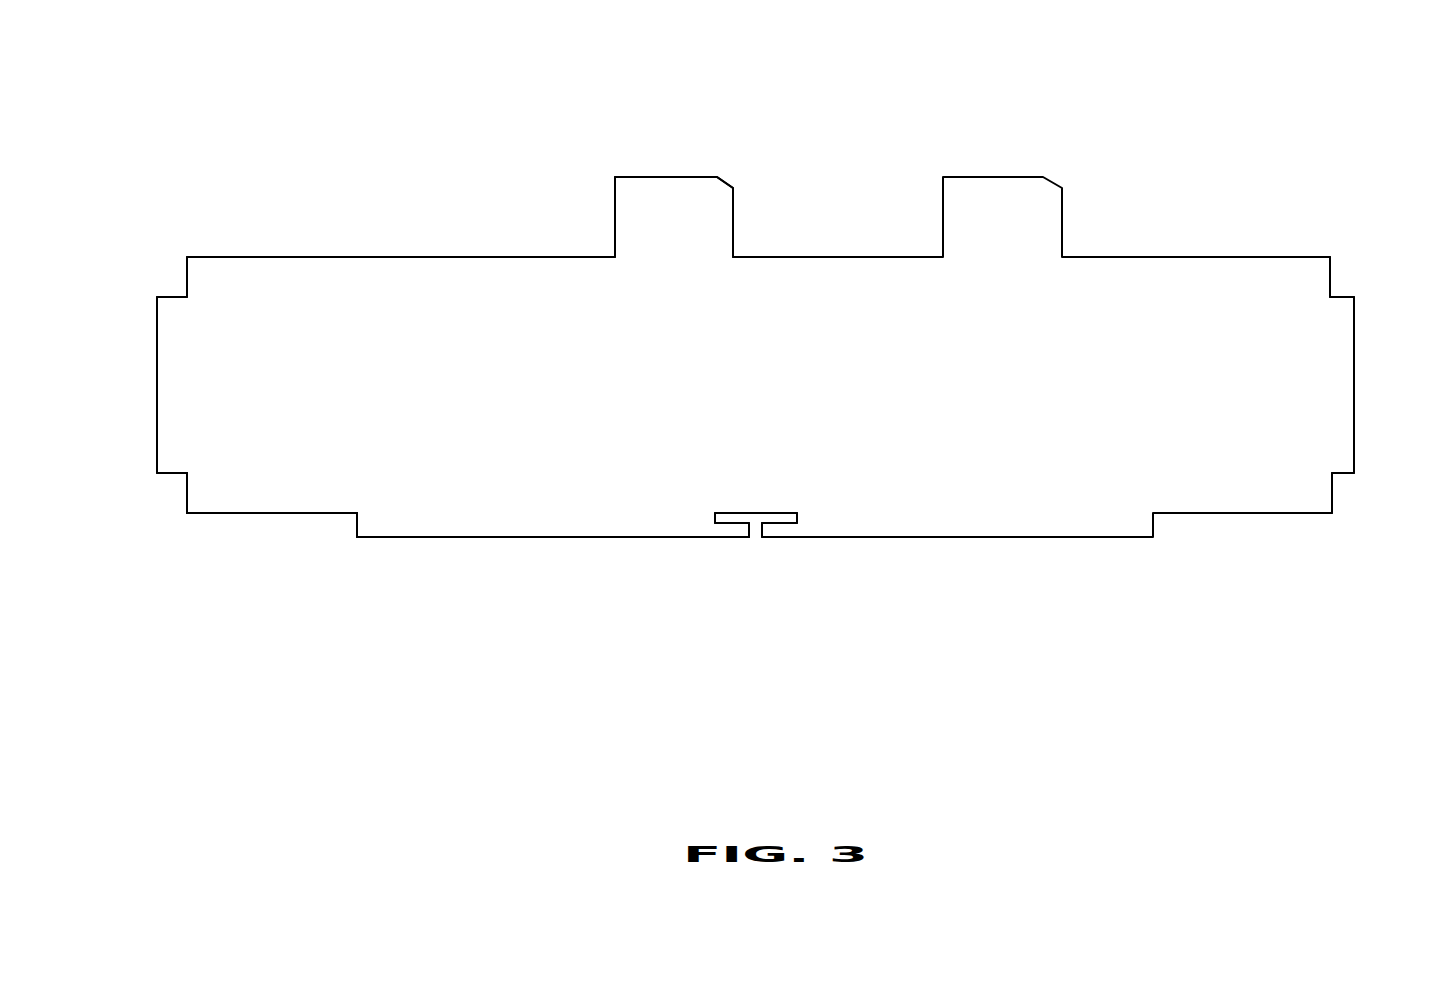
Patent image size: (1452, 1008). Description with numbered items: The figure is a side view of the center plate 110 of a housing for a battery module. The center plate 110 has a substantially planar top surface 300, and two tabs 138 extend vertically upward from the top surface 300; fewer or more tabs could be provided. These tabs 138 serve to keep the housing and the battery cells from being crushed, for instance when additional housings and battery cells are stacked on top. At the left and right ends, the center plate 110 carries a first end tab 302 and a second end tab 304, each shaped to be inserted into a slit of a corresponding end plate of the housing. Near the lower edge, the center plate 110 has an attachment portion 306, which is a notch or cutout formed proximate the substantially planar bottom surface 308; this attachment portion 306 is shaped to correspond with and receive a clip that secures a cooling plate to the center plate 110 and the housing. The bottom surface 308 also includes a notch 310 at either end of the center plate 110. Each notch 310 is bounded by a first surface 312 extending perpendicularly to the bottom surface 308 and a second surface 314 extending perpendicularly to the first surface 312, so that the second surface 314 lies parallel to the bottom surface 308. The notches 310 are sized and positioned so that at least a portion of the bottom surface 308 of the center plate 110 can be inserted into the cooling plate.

The center plate 110 is at (1177, 120).
The tabs 138 is at (705, 188).
The top surface 300 is at (1177, 257).
The first end tab 302 is at (157, 322).
The second end tab 304 is at (1354, 380).
The attachment portion 306 is at (749, 537).
The bottom surface 308 is at (417, 537).
The notch 310 is at (250, 557).
The first surface 312 is at (357, 520).
The second surface 314 is at (242, 513).